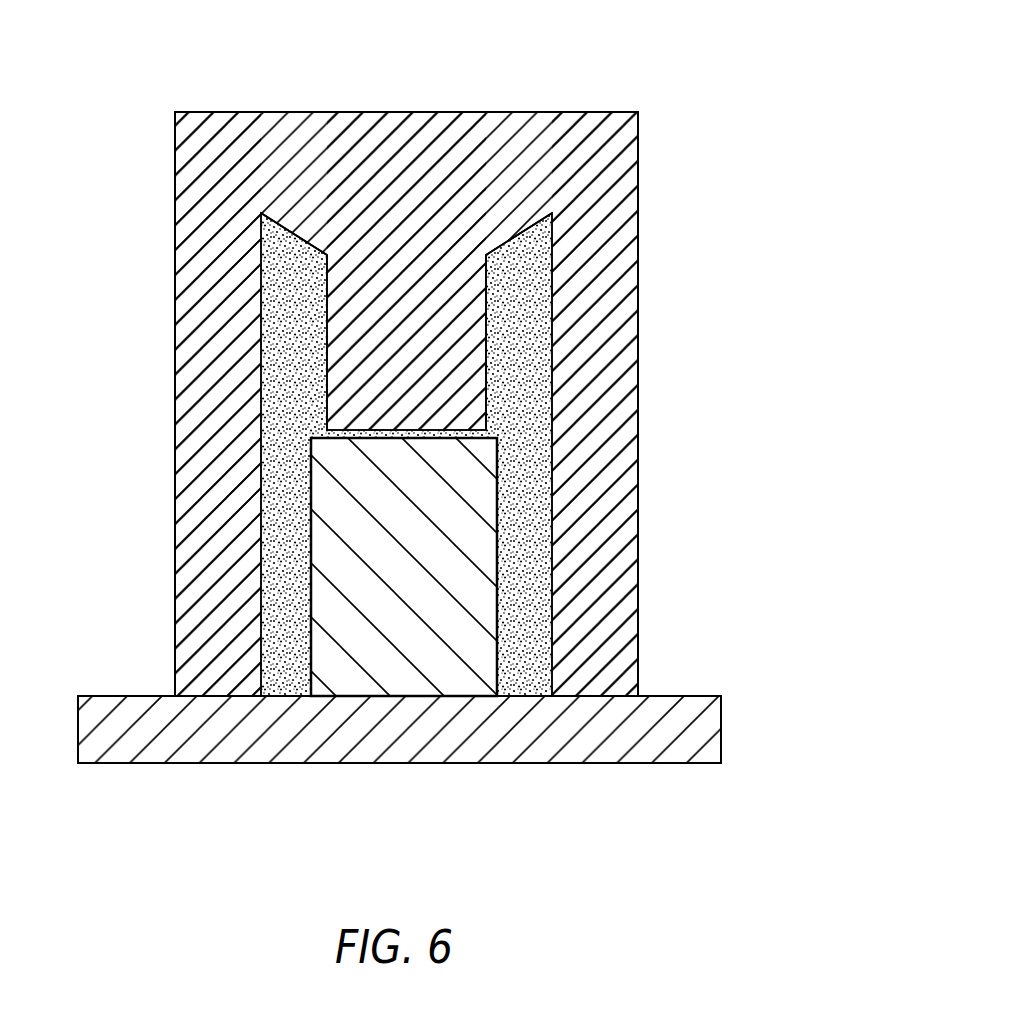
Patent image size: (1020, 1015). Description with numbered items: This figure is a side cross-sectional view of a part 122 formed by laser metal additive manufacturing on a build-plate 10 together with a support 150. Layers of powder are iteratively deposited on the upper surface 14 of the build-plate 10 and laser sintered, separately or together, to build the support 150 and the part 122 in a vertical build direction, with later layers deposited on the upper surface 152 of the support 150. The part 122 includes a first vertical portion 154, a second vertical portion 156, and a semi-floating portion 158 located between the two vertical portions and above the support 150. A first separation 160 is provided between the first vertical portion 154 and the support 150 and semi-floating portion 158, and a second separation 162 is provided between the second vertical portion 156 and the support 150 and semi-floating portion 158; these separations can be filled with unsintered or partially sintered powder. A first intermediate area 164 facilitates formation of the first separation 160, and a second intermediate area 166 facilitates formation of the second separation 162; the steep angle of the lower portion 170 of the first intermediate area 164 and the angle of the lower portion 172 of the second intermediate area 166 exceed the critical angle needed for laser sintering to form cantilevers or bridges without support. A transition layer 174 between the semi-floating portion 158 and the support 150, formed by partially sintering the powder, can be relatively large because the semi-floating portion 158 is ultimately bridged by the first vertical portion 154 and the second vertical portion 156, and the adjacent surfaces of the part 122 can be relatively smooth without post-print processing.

The build-plate 10 is at (745, 735).
The upper surface 14 is at (691, 696).
The part 122 is at (660, 303).
The support 150 is at (505, 611).
The upper surface 152 is at (318, 437).
The first vertical portion 154 is at (193, 418).
The second vertical portion 156 is at (617, 413).
The semi-floating portion 158 is at (447, 380).
The first separation 160 is at (292, 359).
The second separation 162 is at (530, 533).
The first intermediate area 164 is at (298, 215).
The second intermediate area 166 is at (533, 207).
The lower portion 170 is at (303, 220).
The lower portion 172 is at (510, 238).
The transition layer 174 is at (434, 434).